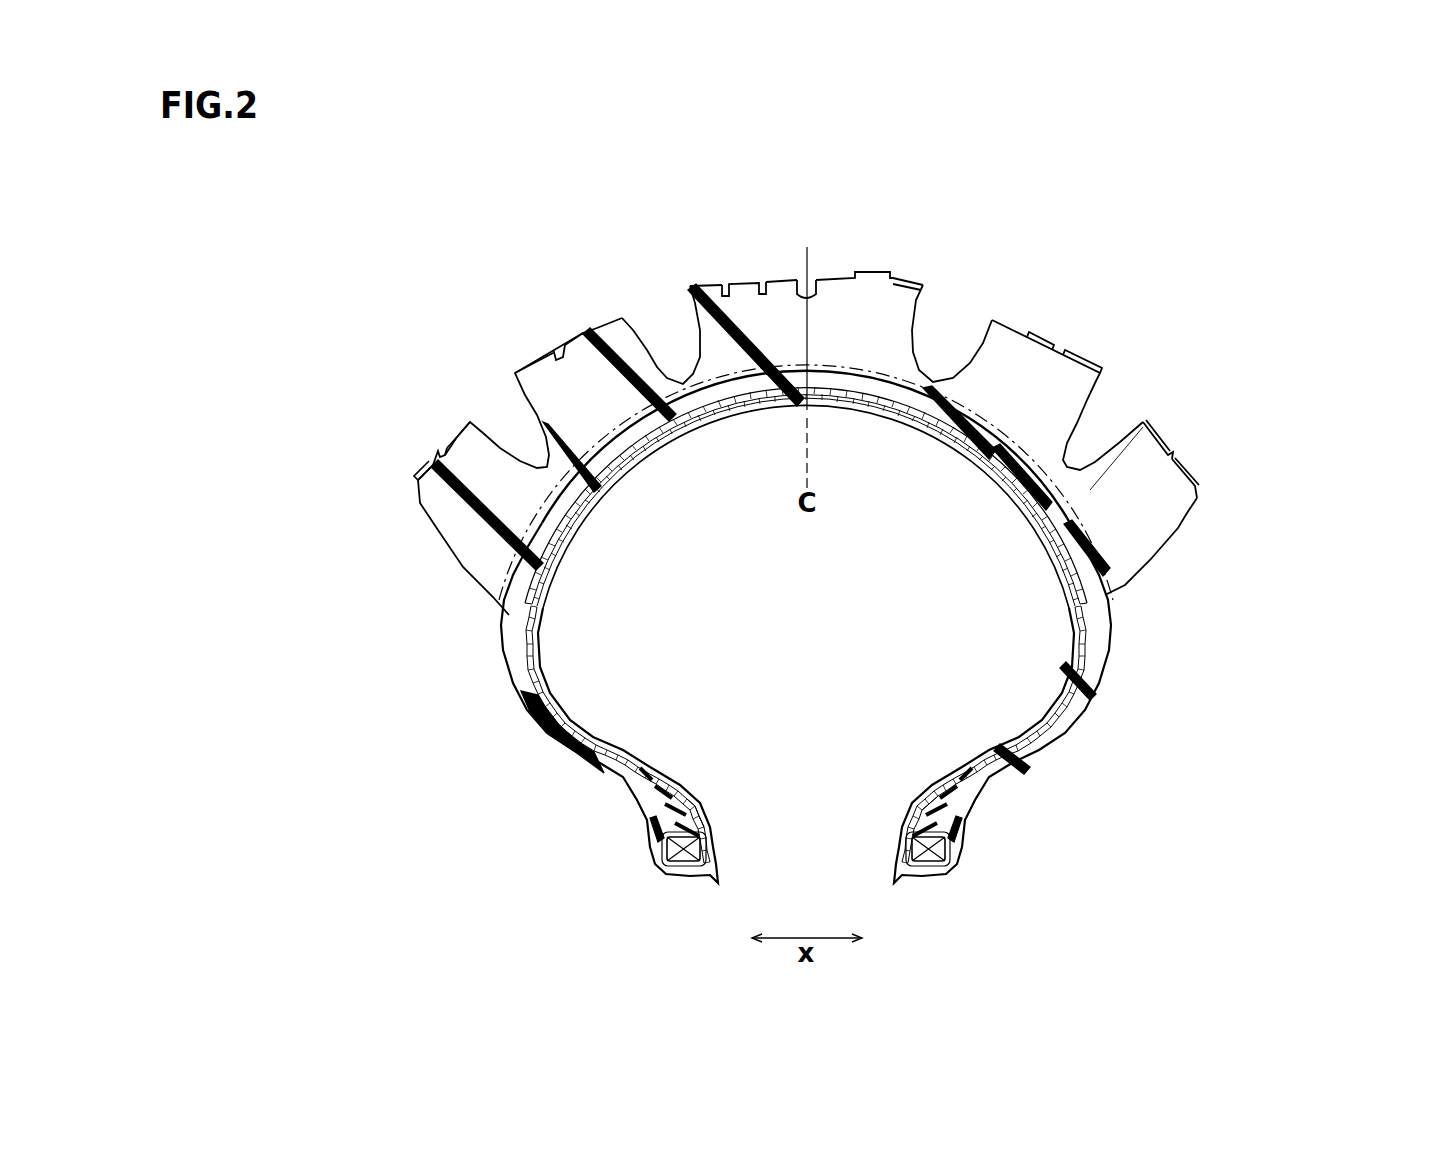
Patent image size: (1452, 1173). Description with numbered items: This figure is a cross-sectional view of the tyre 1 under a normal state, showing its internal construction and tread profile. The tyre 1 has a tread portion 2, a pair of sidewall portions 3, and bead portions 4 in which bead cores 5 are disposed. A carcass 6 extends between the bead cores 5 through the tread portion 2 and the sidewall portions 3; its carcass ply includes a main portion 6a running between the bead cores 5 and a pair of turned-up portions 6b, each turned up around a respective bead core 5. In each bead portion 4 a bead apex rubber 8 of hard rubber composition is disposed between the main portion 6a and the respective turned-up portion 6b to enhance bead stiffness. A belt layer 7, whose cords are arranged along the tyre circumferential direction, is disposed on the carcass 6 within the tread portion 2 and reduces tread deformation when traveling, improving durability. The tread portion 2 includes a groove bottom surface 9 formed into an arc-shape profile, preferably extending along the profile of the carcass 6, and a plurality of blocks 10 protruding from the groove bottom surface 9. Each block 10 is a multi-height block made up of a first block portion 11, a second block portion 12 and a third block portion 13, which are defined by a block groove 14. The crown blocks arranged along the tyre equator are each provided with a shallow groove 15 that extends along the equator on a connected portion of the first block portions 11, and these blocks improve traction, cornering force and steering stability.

The tyre 1 is at (1237, 232).
The tread portion 2 is at (1220, 320).
The sidewall portions 3 is at (487, 714).
The bead portions 4 is at (618, 822).
The bead cores 5 is at (688, 856).
The carcass 6 is at (870, 677).
The main portion 6a is at (953, 773).
The turned-up portions 6b is at (977, 767).
The belt layer 7 is at (875, 405).
The bead apex rubber 8 is at (680, 824).
The groove bottom surface 9 is at (1108, 547).
The blocks 10 is at (1282, 535).
The first block portion 11 is at (604, 326).
The second block portion 12 is at (742, 280).
The third block portion 13 is at (688, 285).
The block groove 14 is at (722, 282).
The shallow groove 15 is at (812, 283).